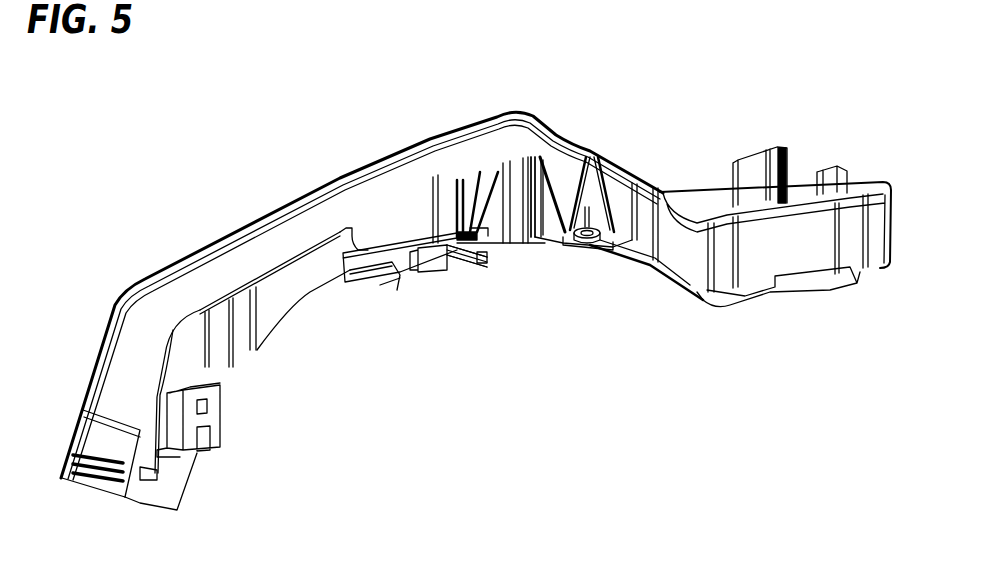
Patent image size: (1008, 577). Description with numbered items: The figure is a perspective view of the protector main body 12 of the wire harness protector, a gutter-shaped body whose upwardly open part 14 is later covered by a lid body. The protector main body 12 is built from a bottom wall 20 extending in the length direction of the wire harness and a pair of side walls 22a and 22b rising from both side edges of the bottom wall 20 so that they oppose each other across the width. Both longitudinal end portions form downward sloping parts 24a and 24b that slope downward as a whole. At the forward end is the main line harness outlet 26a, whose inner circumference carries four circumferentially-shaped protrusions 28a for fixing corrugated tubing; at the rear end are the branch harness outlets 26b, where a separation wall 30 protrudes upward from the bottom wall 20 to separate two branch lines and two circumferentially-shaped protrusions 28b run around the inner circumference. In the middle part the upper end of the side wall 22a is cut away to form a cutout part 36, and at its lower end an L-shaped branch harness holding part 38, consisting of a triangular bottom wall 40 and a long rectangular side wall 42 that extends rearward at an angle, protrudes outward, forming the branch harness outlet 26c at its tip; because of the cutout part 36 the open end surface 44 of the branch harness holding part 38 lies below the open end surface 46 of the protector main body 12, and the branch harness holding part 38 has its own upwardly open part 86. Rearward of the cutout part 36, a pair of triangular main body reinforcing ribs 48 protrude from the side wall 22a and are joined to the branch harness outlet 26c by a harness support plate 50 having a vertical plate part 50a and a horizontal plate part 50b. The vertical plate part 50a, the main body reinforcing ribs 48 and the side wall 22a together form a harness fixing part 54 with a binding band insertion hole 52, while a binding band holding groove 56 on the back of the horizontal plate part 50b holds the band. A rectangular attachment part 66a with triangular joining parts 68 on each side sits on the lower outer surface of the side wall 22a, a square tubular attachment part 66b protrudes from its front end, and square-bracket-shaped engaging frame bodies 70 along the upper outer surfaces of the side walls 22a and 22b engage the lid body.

The protector main body 12 is at (497, 74).
The upwardly open part 14 is at (492, 138).
The bottom wall 20 is at (437, 243).
The side wall 22a is at (283, 300).
The side wall 22b is at (357, 180).
The downward sloping part 24a is at (205, 477).
The downward sloping part 24b is at (655, 302).
The main line harness outlet 26a is at (85, 522).
The branch harness outlets 26b is at (808, 154).
The branch harness outlet 26c is at (476, 242).
The circumferentially-shaped protrusions 28a is at (106, 482).
The circumferentially-shaped protrusions 28b is at (777, 178).
The separation wall 30 is at (835, 190).
The cutout part 36 is at (352, 230).
The branch harness holding part 38 is at (355, 334).
The bottom wall 40 is at (393, 288).
The side wall 42 is at (400, 305).
The open end surface 44 is at (400, 236).
The open end surface 46 is at (330, 236).
The main body reinforcing ribs 48 is at (468, 228).
The harness support plate 50 is at (433, 350).
The vertical plate part 50a is at (470, 262).
The horizontal plate part 50b is at (476, 268).
The binding band insertion hole 52 is at (472, 234).
The harness fixing part 54 is at (484, 230).
The binding band holding groove 56 is at (482, 263).
The attachment part 66a is at (585, 250).
The attachment part 66b is at (210, 418).
The joining part 68 is at (550, 210).
The engaging frame body 70 is at (313, 193).
The upwardly open part 86 is at (413, 270).